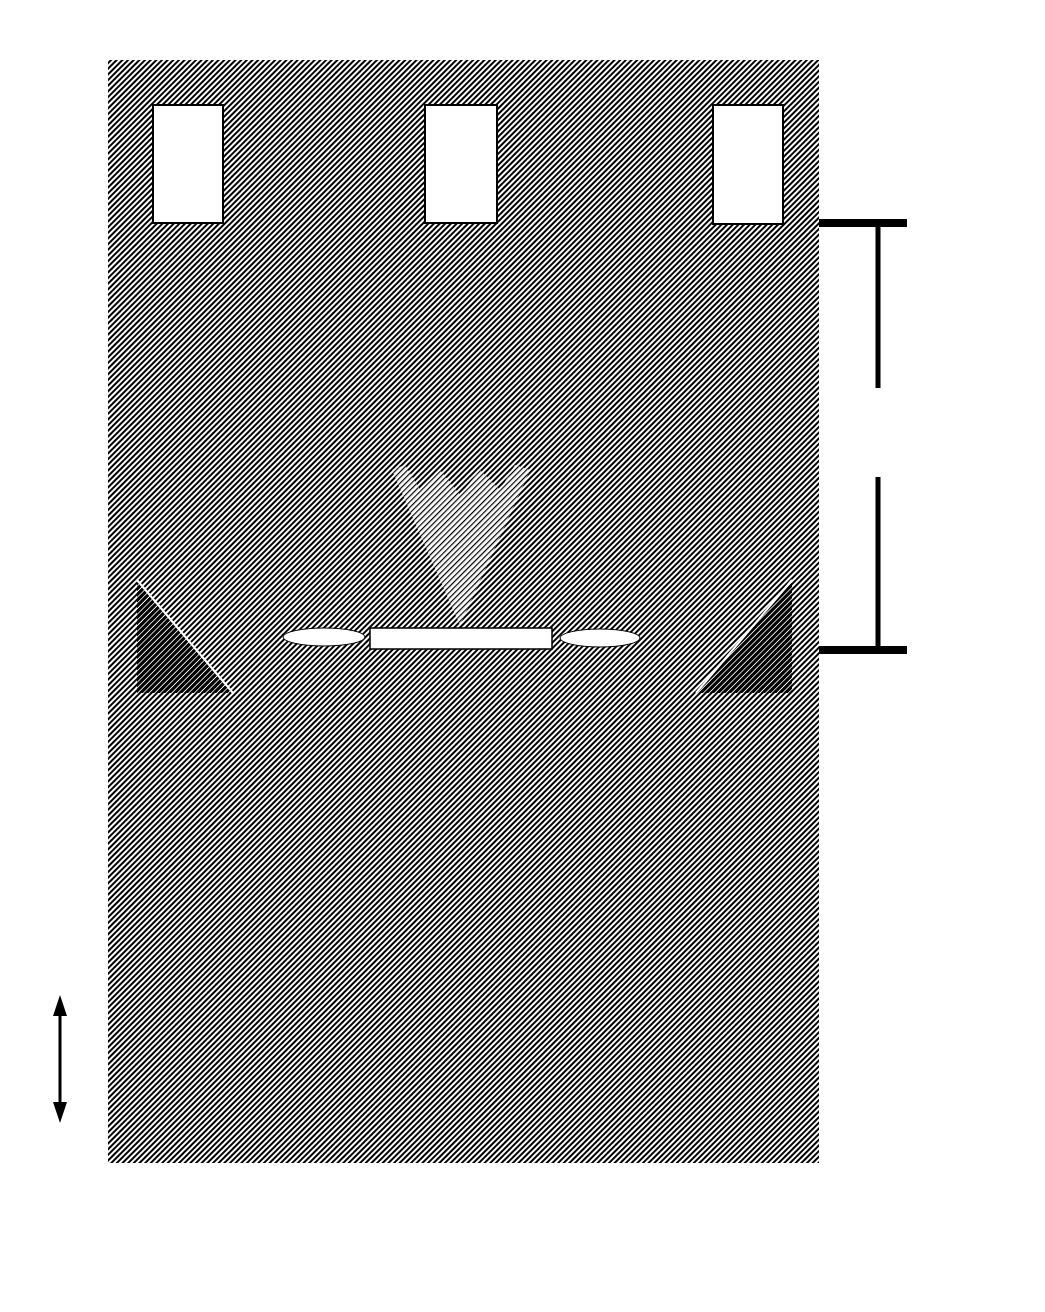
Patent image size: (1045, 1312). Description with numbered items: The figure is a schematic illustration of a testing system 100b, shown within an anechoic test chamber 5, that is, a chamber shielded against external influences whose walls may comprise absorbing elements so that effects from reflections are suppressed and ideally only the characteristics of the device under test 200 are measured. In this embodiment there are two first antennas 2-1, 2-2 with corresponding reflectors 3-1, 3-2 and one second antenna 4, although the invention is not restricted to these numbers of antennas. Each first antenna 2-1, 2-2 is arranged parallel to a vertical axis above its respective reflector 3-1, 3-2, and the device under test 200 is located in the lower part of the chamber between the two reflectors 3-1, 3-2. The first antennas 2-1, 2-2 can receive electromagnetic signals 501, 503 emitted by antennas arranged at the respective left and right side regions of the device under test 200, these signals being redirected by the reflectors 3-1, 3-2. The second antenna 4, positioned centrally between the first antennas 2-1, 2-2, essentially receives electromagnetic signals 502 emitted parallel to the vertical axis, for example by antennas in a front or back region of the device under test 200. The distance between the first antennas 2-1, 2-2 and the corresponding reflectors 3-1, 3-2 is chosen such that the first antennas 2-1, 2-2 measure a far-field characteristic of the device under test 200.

The testing system 100b is at (890, 31).
The first antenna 2-1 is at (192, 125).
The second antenna 4 is at (467, 127).
The first antenna 2-2 is at (753, 128).
The electromagnetic signals 502 is at (423, 522).
The reflector 3-1 is at (192, 666).
The reflector 3-2 is at (777, 669).
The electromagnetic signals 501 is at (330, 637).
The electromagnetic signals 503 is at (630, 640).
The device under test 200 is at (448, 645).
The anechoic test chamber 5 is at (775, 1057).